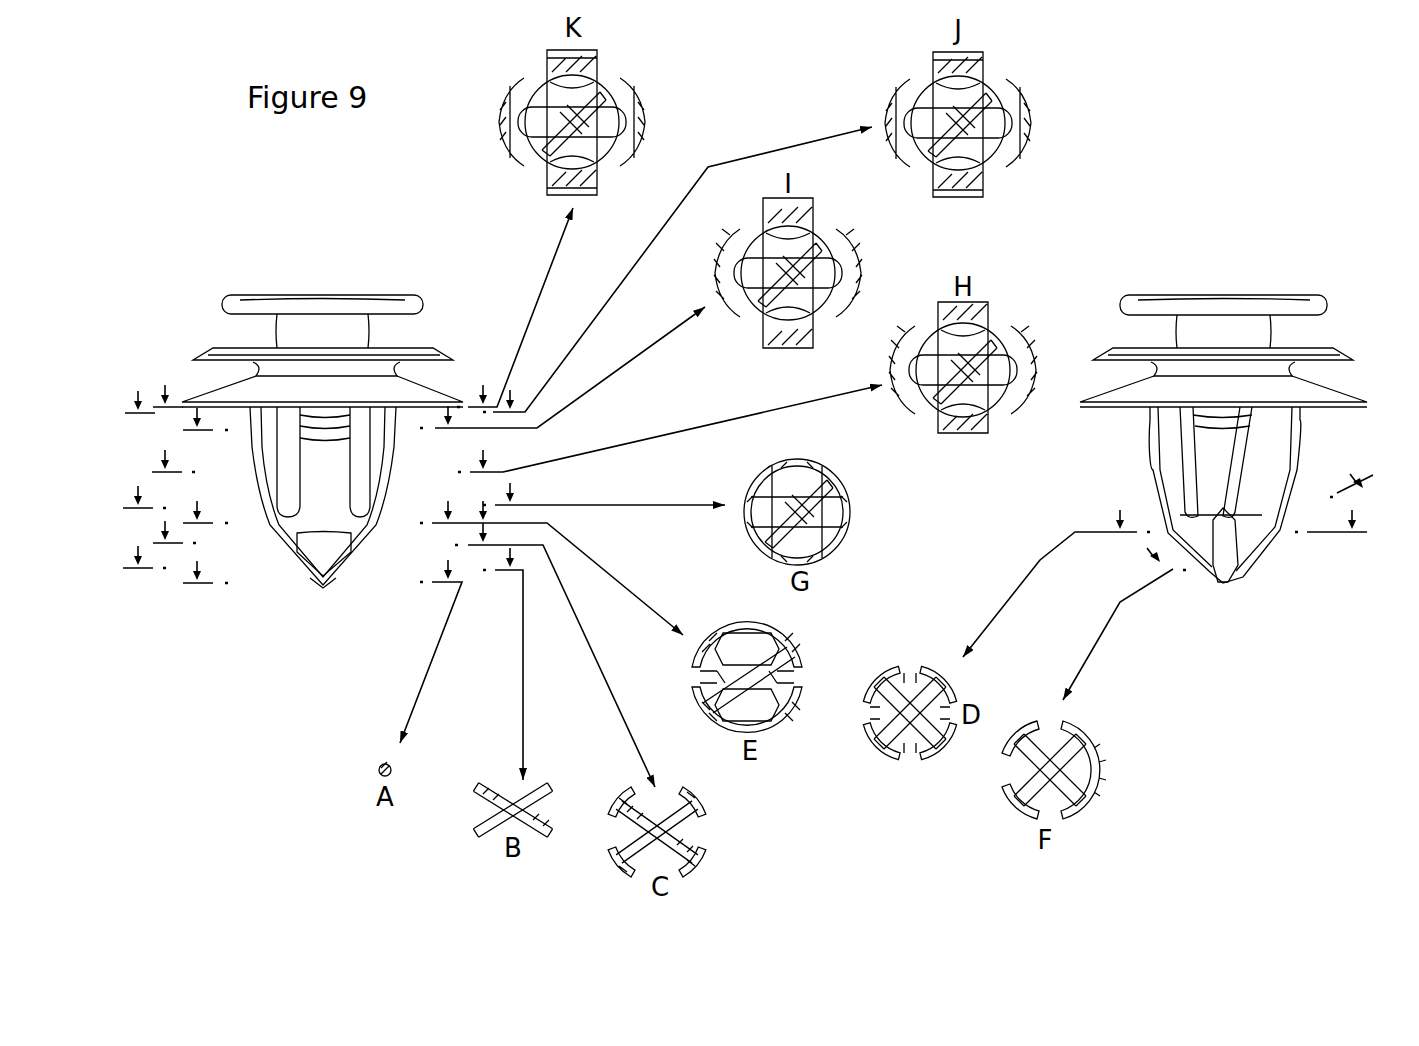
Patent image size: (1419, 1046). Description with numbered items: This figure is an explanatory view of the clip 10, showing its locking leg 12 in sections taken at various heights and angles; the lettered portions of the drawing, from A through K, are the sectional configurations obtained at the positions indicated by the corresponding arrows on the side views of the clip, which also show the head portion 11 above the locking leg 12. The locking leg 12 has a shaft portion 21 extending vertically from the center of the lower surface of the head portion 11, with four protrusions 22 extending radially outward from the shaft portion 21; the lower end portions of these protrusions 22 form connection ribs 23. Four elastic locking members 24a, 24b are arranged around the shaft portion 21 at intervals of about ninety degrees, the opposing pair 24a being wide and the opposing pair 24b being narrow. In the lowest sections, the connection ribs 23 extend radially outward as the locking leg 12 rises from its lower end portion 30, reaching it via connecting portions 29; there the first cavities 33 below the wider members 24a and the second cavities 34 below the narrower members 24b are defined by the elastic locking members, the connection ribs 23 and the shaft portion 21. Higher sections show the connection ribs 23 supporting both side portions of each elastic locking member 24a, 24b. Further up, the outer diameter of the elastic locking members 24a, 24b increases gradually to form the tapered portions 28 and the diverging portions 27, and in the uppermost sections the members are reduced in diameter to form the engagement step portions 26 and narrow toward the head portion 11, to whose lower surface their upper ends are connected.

The clip 10 is at (356, 268).
The head portion 11 is at (208, 304).
The locking leg 12 is at (258, 551).
The shaft portion 21 is at (573, 162).
The protrusions 22 is at (578, 138).
The connection ribs 23 is at (708, 680).
The elastic locking members 24a is at (385, 473).
The elastic locking members 24b is at (340, 500).
The engagement step portions 26 is at (500, 125).
The diverging portions 27 is at (861, 240).
The tapered portions 28 is at (727, 265).
The connecting portions 29 is at (780, 642).
The lower end portion 30 is at (325, 588).
The first cavities 33 is at (1227, 560).
The second cavities 34 is at (312, 557).